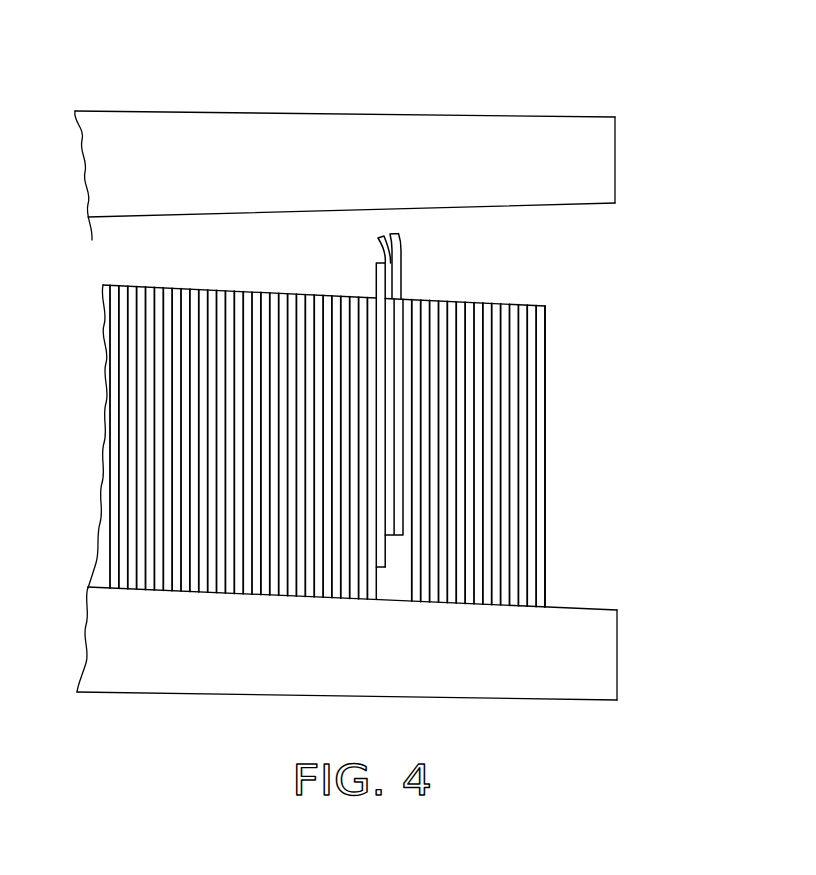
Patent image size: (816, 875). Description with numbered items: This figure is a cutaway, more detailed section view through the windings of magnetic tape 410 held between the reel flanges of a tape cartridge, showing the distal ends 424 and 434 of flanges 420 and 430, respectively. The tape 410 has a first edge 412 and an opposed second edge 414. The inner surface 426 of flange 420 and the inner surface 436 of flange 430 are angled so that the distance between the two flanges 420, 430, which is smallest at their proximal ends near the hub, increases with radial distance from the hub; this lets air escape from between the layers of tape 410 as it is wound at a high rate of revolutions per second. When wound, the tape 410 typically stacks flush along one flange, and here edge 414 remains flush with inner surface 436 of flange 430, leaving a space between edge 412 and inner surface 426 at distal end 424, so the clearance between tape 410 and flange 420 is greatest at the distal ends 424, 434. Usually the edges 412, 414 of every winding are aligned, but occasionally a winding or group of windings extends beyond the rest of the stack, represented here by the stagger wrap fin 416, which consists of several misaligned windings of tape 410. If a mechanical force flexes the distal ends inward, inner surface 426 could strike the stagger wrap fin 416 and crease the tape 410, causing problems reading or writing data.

The tape 410 is at (369, 487).
The first edge 412 is at (438, 298).
The second edge 414 is at (380, 598).
The stagger wrap fin 416 is at (400, 258).
The flange 420 is at (354, 141).
The distal end 424 is at (580, 136).
The inner surface 426 is at (562, 203).
The flange 430 is at (385, 641).
The distal end 434 is at (603, 665).
The inner surface 436 is at (585, 608).